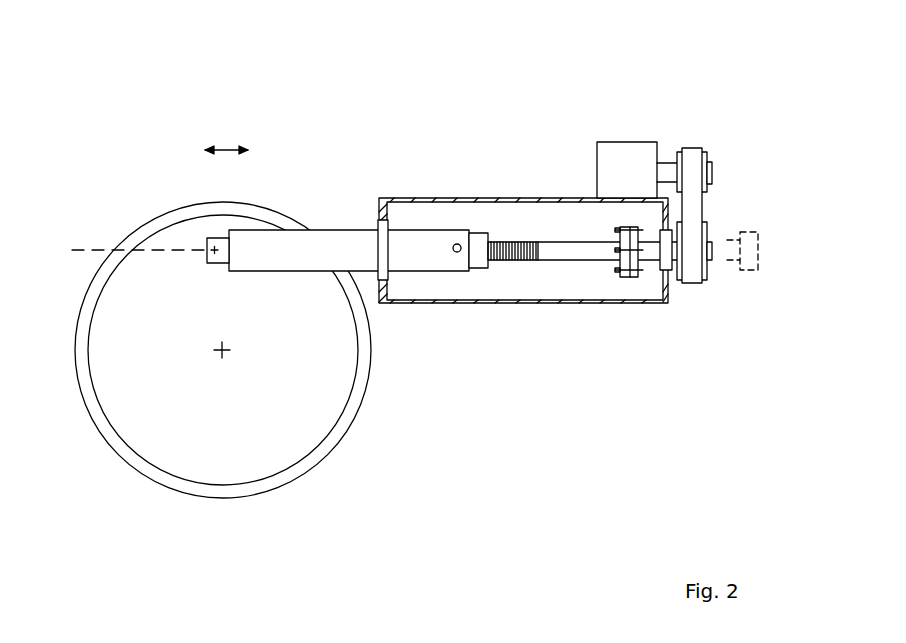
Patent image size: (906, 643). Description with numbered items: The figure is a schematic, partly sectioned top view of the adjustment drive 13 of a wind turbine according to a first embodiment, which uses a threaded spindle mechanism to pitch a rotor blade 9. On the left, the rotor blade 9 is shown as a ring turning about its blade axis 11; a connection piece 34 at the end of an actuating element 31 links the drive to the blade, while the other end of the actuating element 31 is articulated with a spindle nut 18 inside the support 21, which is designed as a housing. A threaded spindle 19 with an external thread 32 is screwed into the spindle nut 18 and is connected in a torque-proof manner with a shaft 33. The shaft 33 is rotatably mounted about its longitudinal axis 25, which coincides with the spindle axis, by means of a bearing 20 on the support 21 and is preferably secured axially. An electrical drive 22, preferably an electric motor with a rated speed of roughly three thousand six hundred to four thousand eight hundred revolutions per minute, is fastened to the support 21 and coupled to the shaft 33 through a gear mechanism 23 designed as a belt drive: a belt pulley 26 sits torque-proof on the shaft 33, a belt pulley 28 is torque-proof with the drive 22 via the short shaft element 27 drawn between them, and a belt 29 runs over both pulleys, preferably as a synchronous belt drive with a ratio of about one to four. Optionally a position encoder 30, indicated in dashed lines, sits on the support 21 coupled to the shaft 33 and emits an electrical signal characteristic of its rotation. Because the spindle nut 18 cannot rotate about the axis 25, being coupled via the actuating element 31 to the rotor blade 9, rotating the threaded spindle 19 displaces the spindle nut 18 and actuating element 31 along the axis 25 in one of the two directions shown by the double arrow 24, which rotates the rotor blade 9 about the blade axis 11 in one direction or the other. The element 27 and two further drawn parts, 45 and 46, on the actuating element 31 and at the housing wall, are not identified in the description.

The rotor blade 9 is at (322, 453).
The blade axis 11 is at (222, 350).
The adjustment drive 13 is at (530, 186).
The spindle nut 18 is at (480, 233).
The threaded spindle 19 is at (572, 262).
The bearing 20 is at (665, 267).
The support 21 is at (405, 198).
The electrical drive 22 is at (613, 142).
The gear mechanism 23 is at (736, 204).
The double arrow 24 is at (225, 150).
The longitudinal axis 25 is at (85, 250).
The belt pulley 26 is at (706, 277).
The motor shaft 27 is at (667, 163).
The belt pulley 28 is at (705, 150).
The belt 29 is at (695, 207).
The position encoder 30 is at (753, 265).
The actuating element 31 is at (351, 230).
The external thread 32 is at (513, 262).
The shaft 33 is at (650, 270).
The connection piece 34 is at (212, 238).
The pin 45 is at (457, 244).
The bushing 46 is at (383, 280).